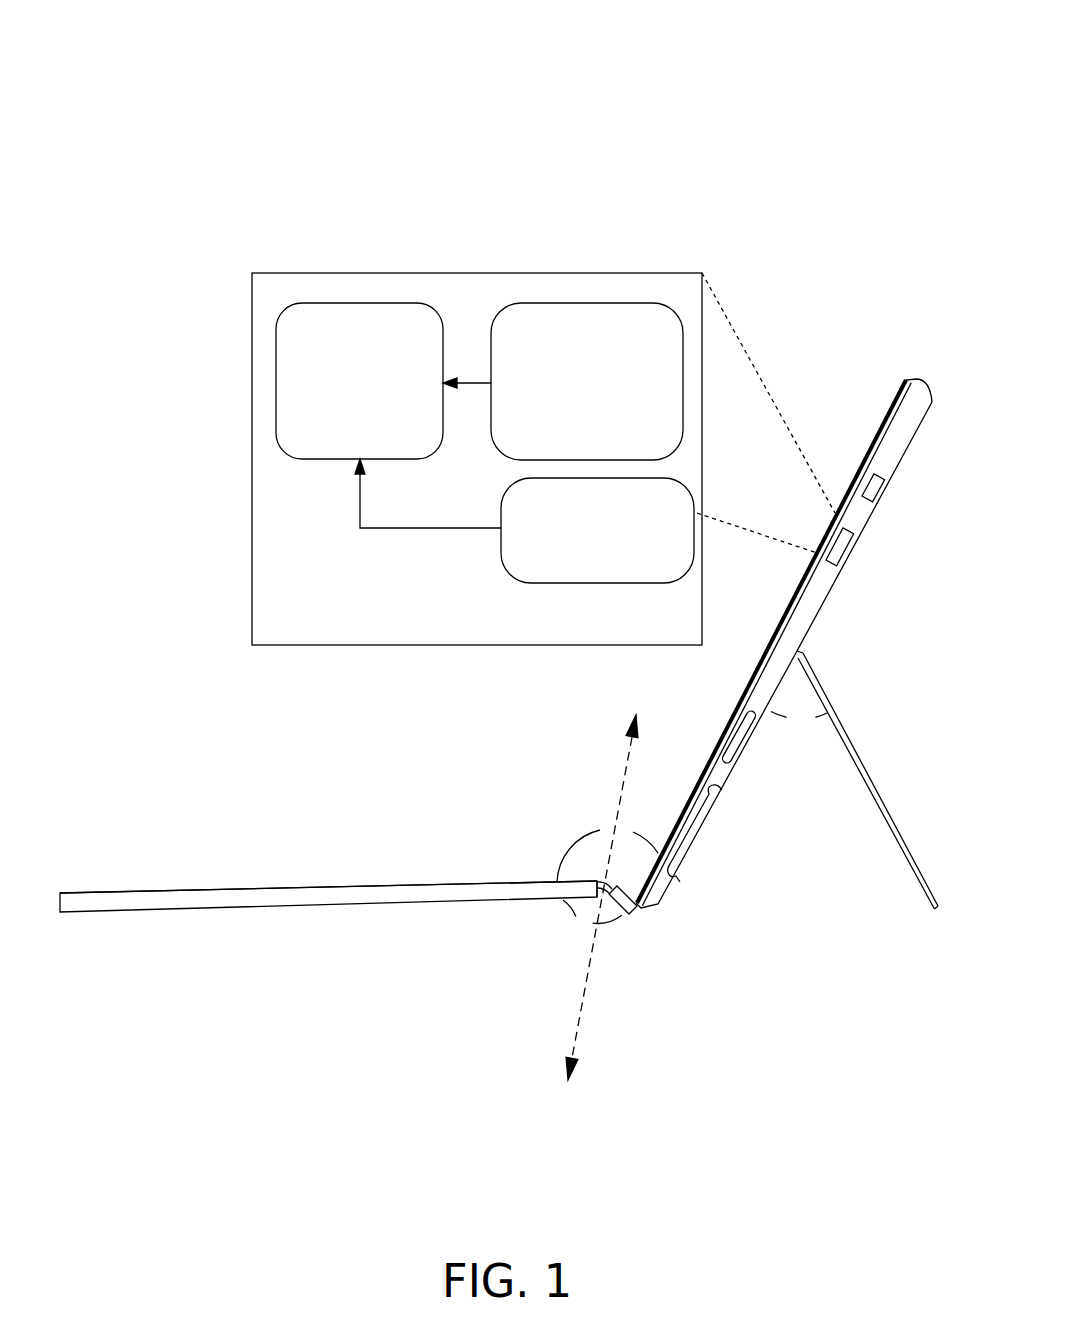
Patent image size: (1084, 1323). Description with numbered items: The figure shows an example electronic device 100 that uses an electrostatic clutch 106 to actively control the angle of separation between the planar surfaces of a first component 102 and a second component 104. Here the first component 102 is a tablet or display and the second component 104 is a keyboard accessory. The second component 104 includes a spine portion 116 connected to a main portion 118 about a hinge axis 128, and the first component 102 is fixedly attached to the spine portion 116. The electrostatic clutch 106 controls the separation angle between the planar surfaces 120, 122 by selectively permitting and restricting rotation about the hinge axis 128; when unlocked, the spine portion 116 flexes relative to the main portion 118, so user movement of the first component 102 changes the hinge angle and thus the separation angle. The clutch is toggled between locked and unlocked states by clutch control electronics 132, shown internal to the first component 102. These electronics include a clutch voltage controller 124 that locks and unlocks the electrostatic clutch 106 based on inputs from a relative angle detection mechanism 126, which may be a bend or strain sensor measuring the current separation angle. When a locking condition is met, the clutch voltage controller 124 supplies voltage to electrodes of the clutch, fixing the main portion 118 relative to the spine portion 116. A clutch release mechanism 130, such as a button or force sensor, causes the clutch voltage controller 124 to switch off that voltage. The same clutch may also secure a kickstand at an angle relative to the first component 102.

The electronic device 100 is at (810, 66).
The first component 102 is at (892, 448).
The second component 104 is at (172, 893).
The electrostatic clutch 106 is at (654, 932).
The spine portion 116 is at (621, 917).
The main portion 118 is at (535, 887).
The planar surface 120 is at (728, 682).
The planar surface 122 is at (277, 874).
The clutch voltage controller 124 is at (341, 437).
The relative angle detection mechanism 126 is at (568, 441).
The hinge axis 128 is at (571, 1037).
The clutch release mechanism 130 is at (578, 572).
The clutch control electronics 132 is at (645, 634).